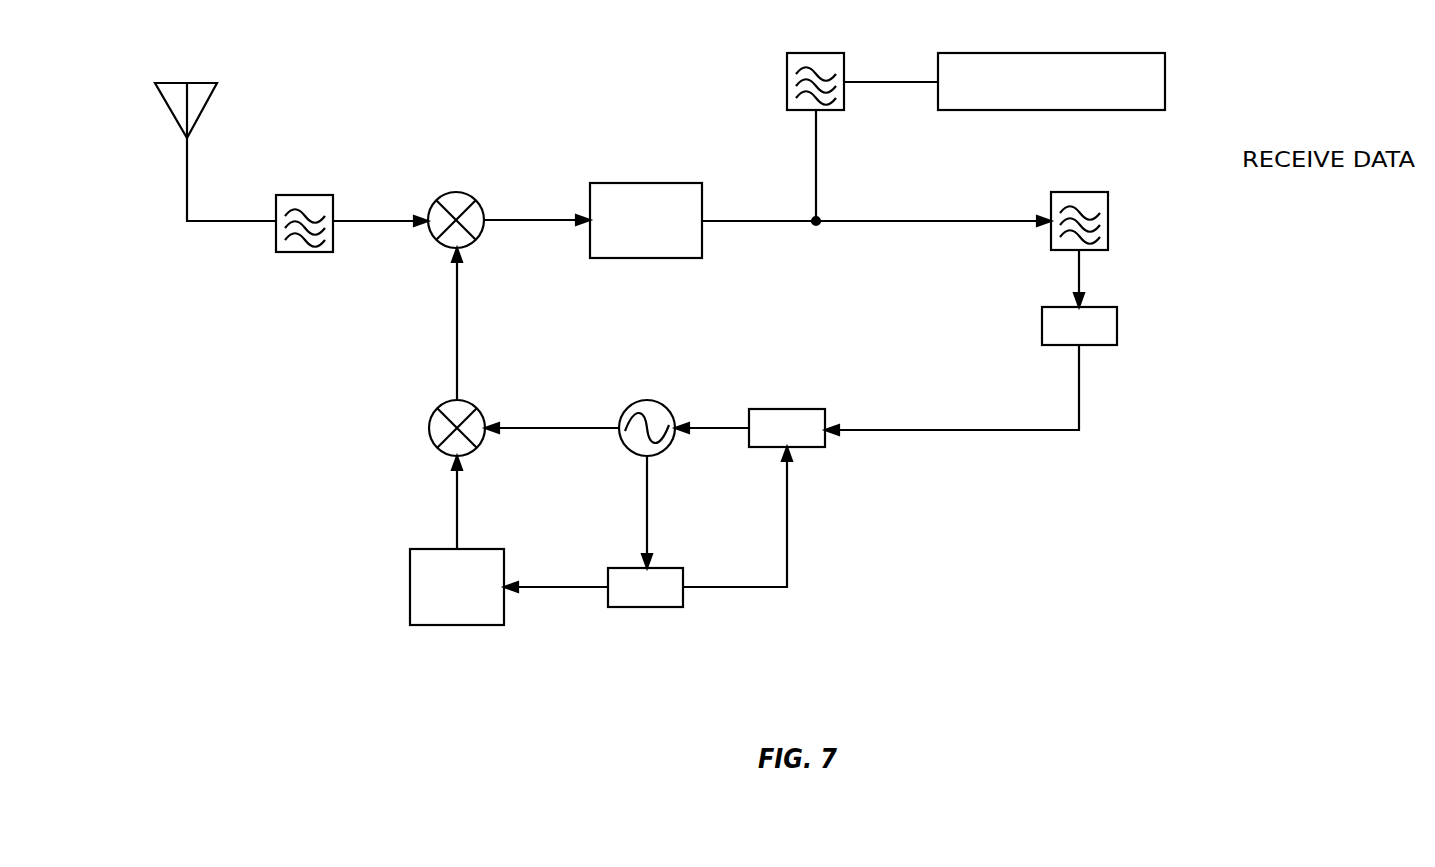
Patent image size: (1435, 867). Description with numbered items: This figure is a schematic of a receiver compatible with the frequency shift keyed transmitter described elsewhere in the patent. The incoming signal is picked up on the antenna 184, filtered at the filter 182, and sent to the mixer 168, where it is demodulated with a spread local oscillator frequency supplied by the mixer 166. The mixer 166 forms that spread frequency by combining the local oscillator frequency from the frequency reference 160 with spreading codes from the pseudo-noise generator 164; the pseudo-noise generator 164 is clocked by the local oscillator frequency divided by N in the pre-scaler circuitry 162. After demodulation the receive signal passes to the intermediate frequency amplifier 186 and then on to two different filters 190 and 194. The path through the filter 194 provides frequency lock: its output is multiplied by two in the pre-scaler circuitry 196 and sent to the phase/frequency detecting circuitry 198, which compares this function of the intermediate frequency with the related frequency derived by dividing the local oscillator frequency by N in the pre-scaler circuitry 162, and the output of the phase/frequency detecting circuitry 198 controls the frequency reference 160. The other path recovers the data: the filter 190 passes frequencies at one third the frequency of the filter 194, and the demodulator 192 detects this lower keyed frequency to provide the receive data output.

The frequency reference 160 is at (665, 408).
The pre-scaler circuitry 162 is at (666, 568).
The pseudo-noise generator 164 is at (484, 549).
The mixer 166 is at (475, 407).
The mixer 168 is at (474, 199).
The filter 182 is at (313, 195).
The antenna 184 is at (208, 102).
The intermediate frequency amplifier 186 is at (662, 183).
The filter 190 is at (826, 53).
The demodulator 192 is at (1096, 53).
The filter 194 is at (1108, 215).
The pre-scaler circuitry 196 is at (1117, 325).
The phase/frequency detecting circuitry 198 is at (795, 409).